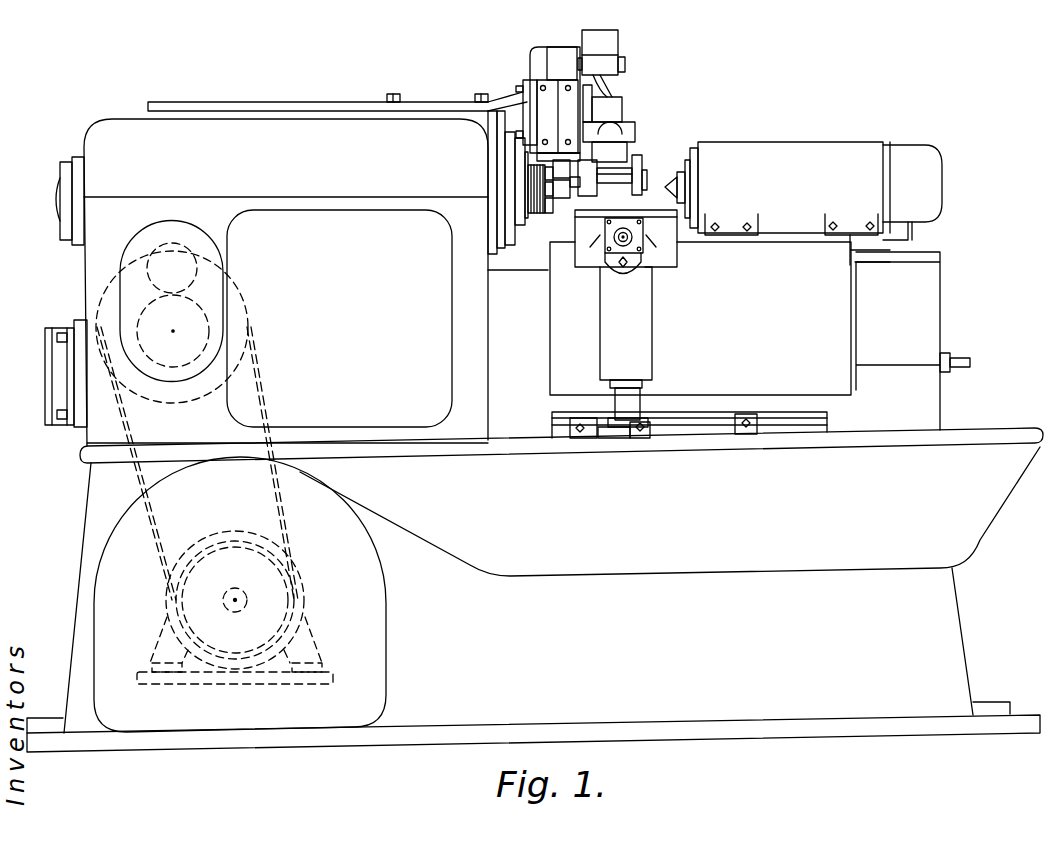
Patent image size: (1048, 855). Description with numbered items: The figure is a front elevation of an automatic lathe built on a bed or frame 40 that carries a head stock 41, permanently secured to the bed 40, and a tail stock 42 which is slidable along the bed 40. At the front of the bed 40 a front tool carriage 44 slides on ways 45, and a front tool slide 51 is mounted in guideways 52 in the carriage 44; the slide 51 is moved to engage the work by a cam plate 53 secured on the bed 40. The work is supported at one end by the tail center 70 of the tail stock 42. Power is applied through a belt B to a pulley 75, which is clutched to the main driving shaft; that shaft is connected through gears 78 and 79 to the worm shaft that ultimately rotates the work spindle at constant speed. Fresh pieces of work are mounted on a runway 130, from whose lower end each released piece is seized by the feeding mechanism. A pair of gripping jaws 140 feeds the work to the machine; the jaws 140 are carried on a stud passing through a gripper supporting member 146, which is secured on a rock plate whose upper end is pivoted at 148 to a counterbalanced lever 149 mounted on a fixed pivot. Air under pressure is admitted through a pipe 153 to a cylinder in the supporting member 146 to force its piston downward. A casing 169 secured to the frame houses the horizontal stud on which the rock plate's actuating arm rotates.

The bed or frame 40 is at (539, 517).
The head stock 41 is at (244, 165).
The tail stock 42 is at (793, 197).
The front tool carriage 44 is at (744, 342).
The ways 45 is at (927, 254).
The front tool slide 51 is at (665, 223).
The guideways 52 is at (650, 243).
The cam plate 53 is at (677, 422).
The tail center 70 is at (677, 188).
The pulley 75 is at (183, 405).
The gear 78 is at (210, 318).
The gear 79 is at (185, 243).
The runway 130 is at (640, 157).
The gripping jaws 140 is at (645, 165).
The gripper supporting member 146 is at (612, 111).
The pivot 148 is at (626, 64).
The counterbalanced lever 149 is at (617, 40).
The pipe 153 is at (617, 77).
The casing 169 is at (552, 63).
The belt B is at (257, 400).